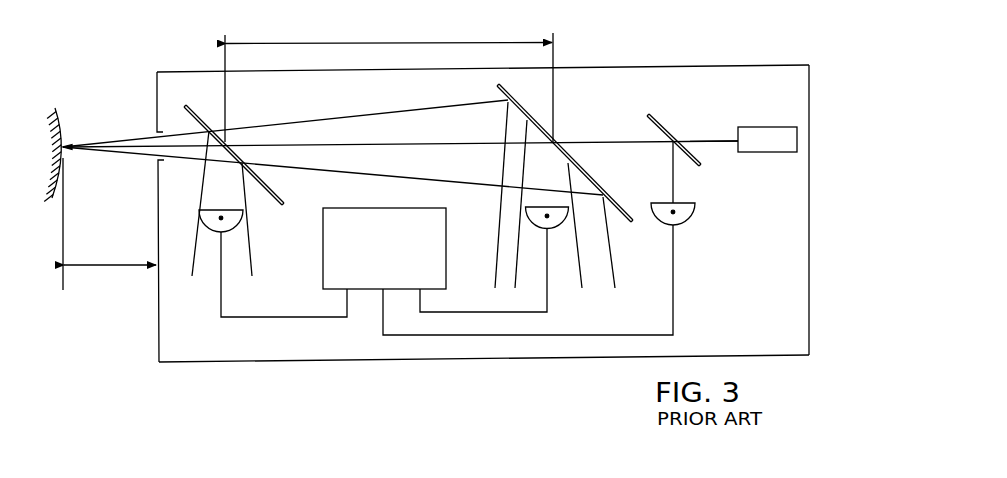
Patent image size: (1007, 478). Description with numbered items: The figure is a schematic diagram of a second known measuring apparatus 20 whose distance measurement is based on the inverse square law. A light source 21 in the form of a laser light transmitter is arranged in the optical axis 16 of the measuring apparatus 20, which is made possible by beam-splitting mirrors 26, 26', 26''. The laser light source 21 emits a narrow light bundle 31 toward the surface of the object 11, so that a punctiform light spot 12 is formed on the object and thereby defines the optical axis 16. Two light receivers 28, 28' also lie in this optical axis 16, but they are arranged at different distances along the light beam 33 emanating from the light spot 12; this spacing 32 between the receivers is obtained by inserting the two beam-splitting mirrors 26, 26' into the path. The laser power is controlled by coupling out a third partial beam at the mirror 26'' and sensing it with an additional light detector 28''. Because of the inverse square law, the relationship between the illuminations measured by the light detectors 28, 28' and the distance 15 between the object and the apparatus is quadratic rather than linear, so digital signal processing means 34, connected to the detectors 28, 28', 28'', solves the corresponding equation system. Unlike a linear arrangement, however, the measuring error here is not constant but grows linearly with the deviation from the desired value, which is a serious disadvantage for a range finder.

The workpiece surface 11 is at (56, 107).
The punctiform light spot 12 is at (67, 143).
The distance 15 is at (108, 263).
The optical axis 16 is at (604, 141).
The measuring apparatus 20 is at (148, 328).
The light source 21 is at (771, 127).
The beam-splitting mirror 26 is at (234, 177).
The beam-splitting mirror 26' is at (572, 153).
The third partial beam 26'' is at (677, 124).
The light receiver 28 is at (269, 224).
The light receiver 28' is at (517, 207).
The additional light detector 28'' is at (569, 238).
The narrow light bundle 31 is at (718, 144).
The distance between beam splitters 32 is at (361, 42).
The light beam 33 is at (303, 121).
The digital signal processing means 34 is at (398, 254).